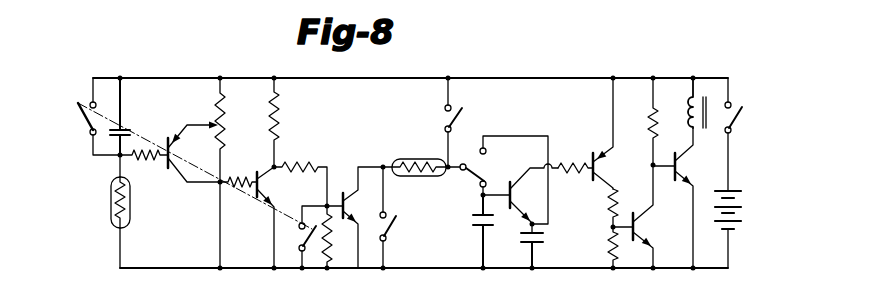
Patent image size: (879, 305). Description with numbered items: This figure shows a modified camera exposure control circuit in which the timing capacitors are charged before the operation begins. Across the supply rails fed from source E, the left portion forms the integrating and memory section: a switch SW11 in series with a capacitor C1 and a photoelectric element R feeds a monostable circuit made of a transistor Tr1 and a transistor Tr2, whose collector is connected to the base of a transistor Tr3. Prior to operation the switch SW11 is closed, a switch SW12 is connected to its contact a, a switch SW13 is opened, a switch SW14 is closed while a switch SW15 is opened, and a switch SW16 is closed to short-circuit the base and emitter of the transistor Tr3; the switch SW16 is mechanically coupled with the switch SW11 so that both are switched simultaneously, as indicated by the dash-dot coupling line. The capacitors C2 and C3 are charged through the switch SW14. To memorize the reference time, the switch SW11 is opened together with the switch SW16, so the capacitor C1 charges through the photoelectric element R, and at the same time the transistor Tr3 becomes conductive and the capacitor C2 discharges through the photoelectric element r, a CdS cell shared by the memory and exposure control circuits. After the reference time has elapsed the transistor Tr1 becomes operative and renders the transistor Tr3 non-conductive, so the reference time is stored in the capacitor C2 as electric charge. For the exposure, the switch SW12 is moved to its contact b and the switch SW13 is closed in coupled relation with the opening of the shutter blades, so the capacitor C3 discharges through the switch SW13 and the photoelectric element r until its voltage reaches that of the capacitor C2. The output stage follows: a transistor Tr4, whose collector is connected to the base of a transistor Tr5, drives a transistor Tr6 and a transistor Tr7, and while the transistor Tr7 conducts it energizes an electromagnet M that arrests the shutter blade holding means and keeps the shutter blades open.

The switch SW11 is at (81, 116).
The capacitor C1 is at (127, 116).
The photoelectric element R is at (129, 211).
The transistor Tr1 is at (194, 168).
The transistor Tr2 is at (247, 217).
The transistor Tr3 is at (354, 207).
The switch SW16 is at (323, 253).
The switch SW13 is at (407, 217).
The photoelectric element r is at (415, 157).
The switch SW14 is at (471, 122).
The switch SW12 is at (492, 180).
The contact a is at (474, 187).
The contact b is at (514, 180).
The transistor Tr4 is at (520, 198).
The capacitor C2 is at (493, 231).
The capacitor C3 is at (541, 249).
The transistor Tr5 is at (585, 133).
The transistor Tr6 is at (633, 216).
The transistor Tr7 is at (681, 198).
The electromagnet M is at (705, 103).
The switch SW15 is at (751, 134).
The battery E is at (735, 229).